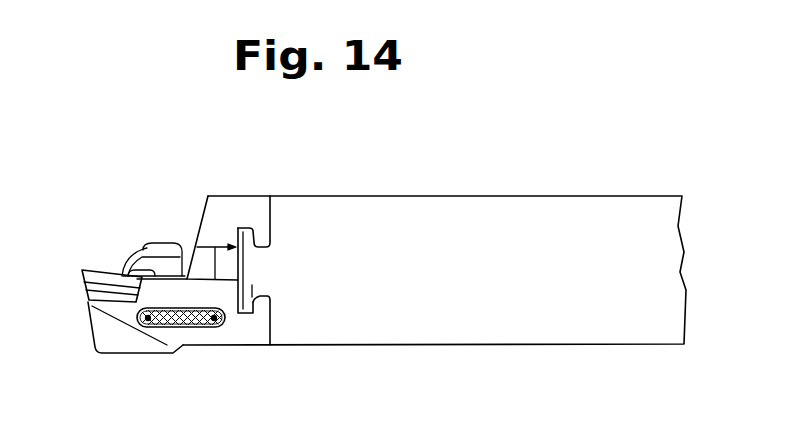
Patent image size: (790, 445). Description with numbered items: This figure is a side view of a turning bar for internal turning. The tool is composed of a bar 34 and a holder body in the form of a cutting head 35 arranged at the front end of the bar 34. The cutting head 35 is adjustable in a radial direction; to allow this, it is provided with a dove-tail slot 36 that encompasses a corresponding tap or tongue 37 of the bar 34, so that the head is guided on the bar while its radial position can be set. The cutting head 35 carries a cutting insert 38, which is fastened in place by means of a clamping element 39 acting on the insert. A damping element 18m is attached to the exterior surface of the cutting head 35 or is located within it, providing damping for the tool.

The bar 34 is at (331, 213).
The cutting head 35 is at (113, 330).
The dove-tail slot 36 is at (259, 238).
The tap or tongue 37 is at (255, 308).
The cutting insert 38 is at (93, 283).
The clamping element 39 is at (147, 262).
The damping element 18m is at (192, 328).